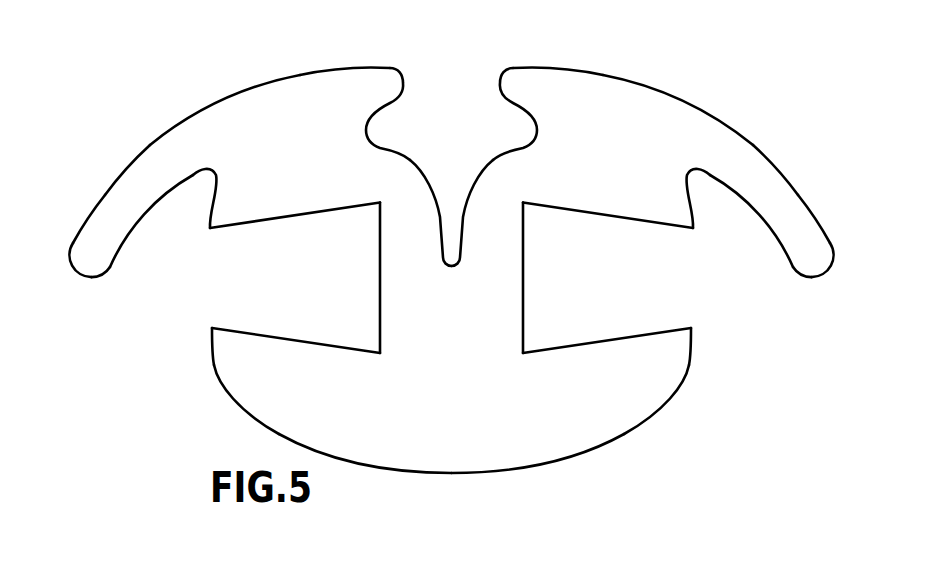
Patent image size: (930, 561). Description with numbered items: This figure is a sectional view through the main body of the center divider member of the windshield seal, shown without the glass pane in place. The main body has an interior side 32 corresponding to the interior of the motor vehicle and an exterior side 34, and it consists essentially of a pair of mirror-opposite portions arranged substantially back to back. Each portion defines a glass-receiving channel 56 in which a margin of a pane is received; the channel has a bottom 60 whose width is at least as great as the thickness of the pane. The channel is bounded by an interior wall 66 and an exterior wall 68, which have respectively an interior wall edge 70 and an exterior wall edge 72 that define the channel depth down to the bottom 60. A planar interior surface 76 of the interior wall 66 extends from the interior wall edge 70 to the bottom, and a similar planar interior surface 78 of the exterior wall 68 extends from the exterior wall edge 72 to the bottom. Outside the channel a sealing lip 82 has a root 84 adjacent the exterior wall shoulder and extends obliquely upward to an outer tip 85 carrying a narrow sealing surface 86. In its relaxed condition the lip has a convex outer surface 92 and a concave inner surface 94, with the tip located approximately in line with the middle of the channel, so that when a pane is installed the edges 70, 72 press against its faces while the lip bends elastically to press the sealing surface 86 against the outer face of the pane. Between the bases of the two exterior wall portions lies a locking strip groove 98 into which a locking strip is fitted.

The interior side 32 is at (560, 463).
The exterior side 34 is at (582, 68).
The glass-receiving channel 56 is at (265, 303).
The bottom 60 is at (376, 276).
The interior wall 66 is at (265, 395).
The exterior wall 68 is at (270, 166).
The interior wall edge 70 is at (207, 328).
The exterior wall edge 72 is at (212, 228).
The planar interior surface 76 is at (337, 343).
The planar interior surface 78 is at (293, 215).
The sealing lip 82 is at (138, 177).
The root 84 is at (203, 110).
The outer tip 85 is at (80, 278).
The sealing surface 86 is at (108, 273).
The convex outer surface 92 is at (97, 203).
The concave inner surface 94 is at (158, 208).
The locking strip groove 98 is at (450, 110).